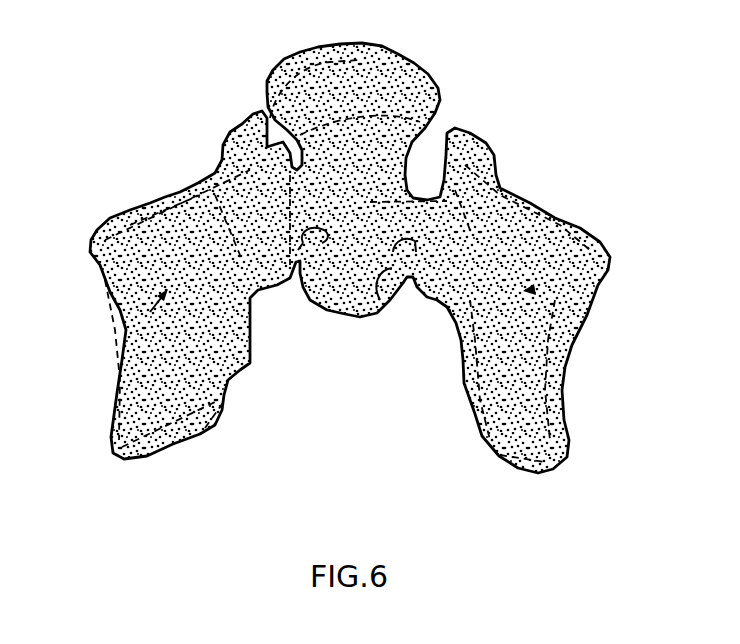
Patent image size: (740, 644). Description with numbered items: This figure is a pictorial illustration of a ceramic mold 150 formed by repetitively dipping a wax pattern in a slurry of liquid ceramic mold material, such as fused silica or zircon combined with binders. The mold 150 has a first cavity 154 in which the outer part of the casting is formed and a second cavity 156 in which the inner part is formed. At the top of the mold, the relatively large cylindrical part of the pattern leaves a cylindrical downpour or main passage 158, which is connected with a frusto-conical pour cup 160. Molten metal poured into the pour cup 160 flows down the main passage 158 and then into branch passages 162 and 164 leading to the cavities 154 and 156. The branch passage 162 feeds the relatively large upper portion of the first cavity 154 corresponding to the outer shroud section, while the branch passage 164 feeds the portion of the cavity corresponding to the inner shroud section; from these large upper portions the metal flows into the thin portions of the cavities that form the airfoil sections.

The ceramic mold 150 is at (612, 92).
The first cavity 154 is at (127, 331).
The second cavity 156 is at (536, 290).
The main passage 158 is at (395, 155).
The pour cup 160 is at (398, 54).
The branch passage 162 is at (288, 290).
The branch passage 164 is at (372, 320).